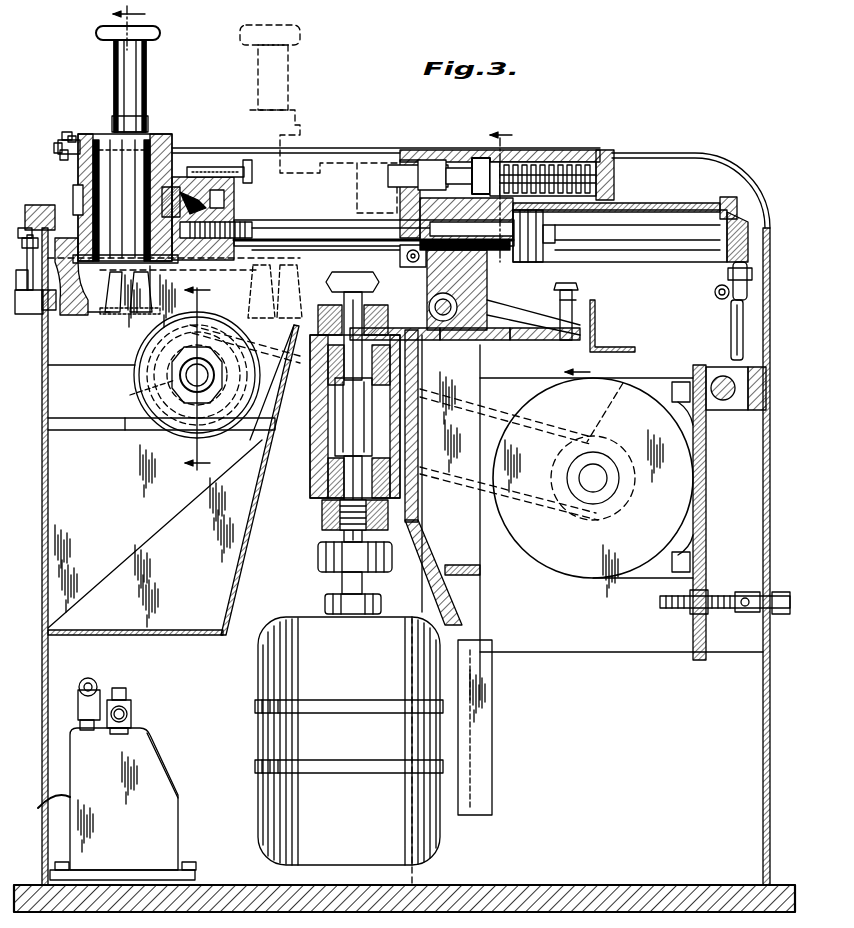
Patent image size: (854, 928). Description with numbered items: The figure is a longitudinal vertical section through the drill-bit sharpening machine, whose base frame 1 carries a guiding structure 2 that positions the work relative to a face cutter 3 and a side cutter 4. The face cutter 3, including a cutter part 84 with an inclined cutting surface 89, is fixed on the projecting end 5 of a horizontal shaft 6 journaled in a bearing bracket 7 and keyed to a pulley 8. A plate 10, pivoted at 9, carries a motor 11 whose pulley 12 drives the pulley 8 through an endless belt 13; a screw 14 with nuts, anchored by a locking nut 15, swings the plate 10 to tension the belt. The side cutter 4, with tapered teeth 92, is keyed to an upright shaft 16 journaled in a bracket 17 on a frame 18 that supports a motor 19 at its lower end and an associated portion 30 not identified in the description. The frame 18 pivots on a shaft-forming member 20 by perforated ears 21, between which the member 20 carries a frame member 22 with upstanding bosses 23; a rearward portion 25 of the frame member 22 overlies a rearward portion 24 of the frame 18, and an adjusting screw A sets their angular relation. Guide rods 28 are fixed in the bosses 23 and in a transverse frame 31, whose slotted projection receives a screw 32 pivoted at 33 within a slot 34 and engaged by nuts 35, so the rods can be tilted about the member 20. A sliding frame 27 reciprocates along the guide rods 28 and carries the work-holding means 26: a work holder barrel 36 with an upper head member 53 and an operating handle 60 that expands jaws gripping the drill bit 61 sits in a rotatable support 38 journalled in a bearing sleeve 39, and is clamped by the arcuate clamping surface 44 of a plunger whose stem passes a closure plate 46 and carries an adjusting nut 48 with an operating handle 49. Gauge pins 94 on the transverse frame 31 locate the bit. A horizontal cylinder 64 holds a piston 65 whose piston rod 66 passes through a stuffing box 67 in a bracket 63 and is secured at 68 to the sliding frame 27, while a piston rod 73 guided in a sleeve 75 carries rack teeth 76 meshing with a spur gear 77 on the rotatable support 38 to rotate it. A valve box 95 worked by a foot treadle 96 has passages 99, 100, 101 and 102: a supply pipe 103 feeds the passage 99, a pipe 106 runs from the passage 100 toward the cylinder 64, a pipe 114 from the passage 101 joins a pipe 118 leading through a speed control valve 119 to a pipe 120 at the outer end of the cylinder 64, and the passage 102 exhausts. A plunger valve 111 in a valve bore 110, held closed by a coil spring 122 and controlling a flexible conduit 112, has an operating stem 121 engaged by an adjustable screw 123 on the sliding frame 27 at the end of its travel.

The frame 1 is at (42, 672).
The guiding structure 2 is at (300, 224).
The face cutter 3 is at (190, 436).
The side cutter 4 is at (330, 288).
The projecting end 5 is at (540, 250).
The horizontal shaft 6 is at (166, 376).
The bearing bracket 7 is at (134, 27).
The pulley 8 is at (137, 393).
The pivot 9 is at (740, 388).
The plate 10 is at (706, 490).
The motor 11 is at (563, 548).
The pulley 12 is at (617, 378).
The endless belt 13 is at (320, 468).
The screw 14 is at (720, 594).
The locking nut 15 is at (778, 594).
The upright shaft 16 is at (345, 396).
The bracket 17 is at (322, 430).
The frame 18 is at (462, 460).
The motor 19 is at (272, 800).
The shaft-forming member 20 is at (400, 256).
The perforated ears 21 is at (475, 340).
The frame member 22 is at (445, 340).
The upstanding bosses 23 is at (420, 244).
The rearwardly extending portion 24 is at (542, 342).
The rearwardly extending portion 25 is at (566, 290).
The work-holding means 26 is at (156, 128).
The sliding frame 27 is at (232, 165).
The guide rods 28 is at (277, 226).
The bracket 30 is at (440, 395).
The transverse frame 31 is at (82, 276).
The screw 32 is at (40, 205).
The pivot axis 33 is at (30, 315).
The slot 34 is at (40, 320).
The nuts 35 is at (30, 240).
The work holder barrel 36 is at (100, 135).
The rotatable support 38 is at (161, 289).
The bearing sleeve 39 is at (250, 222).
The arcuate clamping surface 44 is at (175, 177).
The closure plate 46 is at (72, 136).
The adjusting nut 48 is at (62, 150).
The operating handle 49 is at (57, 143).
The upper head member 53 is at (112, 128).
The operating handle 60 is at (140, 52).
The drill bit 61 is at (112, 315).
The bracket 63 is at (485, 275).
The horizontal cylinder 64 is at (628, 203).
The piston 65 is at (552, 162).
The piston rod 66 is at (312, 238).
The stuffing box 67 is at (492, 162).
The securing point 68 is at (280, 150).
The common piston rod 73 is at (192, 192).
The sleeve 75 is at (215, 190).
The rack teeth 76 is at (172, 187).
The spur gear 77 is at (70, 155).
The cutter part 84 is at (150, 412).
The inclined cutting surface 89 is at (168, 418).
The tapered teeth 92 is at (275, 304).
The gauge pins 94 is at (106, 316).
The valve box 95 is at (162, 768).
The foot treadle 96 is at (41, 794).
The passage 99 is at (404, 920).
The passage 100 is at (92, 718).
The passage 101 is at (131, 710).
The passage 102 is at (128, 732).
The fluid supply pipe 103 is at (404, 906).
The pipe 106 is at (83, 697).
The valve bore 110 is at (425, 165).
The plunger valve 111 is at (476, 158).
The flexible conduit 112 is at (404, 906).
The pipe 114 is at (125, 682).
The pipe 118 is at (731, 318).
The adjustable speed control valve 119 is at (715, 292).
The pipe 120 is at (745, 270).
The operating stem 121 is at (398, 165).
The coil spring 122 is at (603, 150).
The adjustable screw 123 is at (272, 148).
The adjusting screw A is at (570, 335).